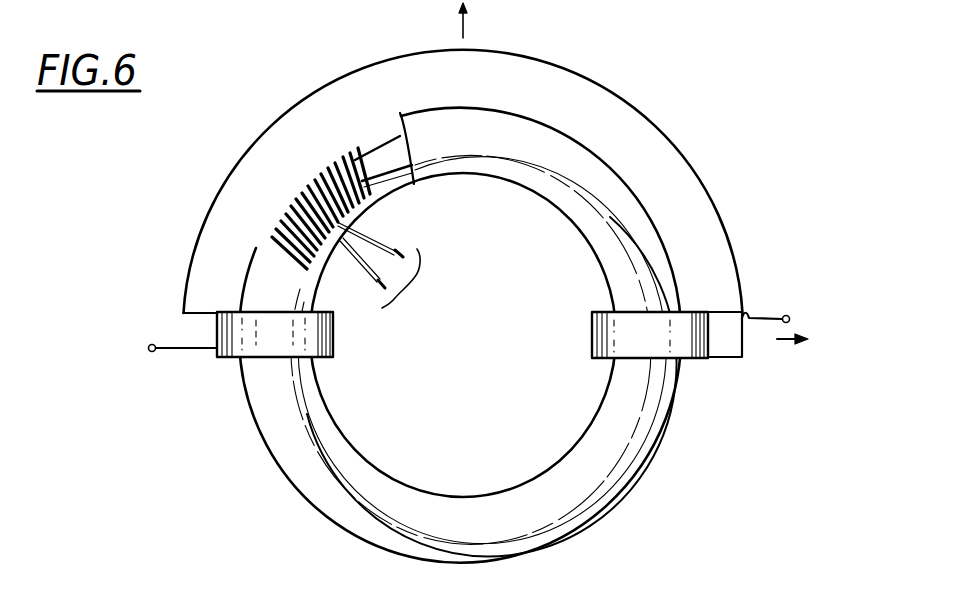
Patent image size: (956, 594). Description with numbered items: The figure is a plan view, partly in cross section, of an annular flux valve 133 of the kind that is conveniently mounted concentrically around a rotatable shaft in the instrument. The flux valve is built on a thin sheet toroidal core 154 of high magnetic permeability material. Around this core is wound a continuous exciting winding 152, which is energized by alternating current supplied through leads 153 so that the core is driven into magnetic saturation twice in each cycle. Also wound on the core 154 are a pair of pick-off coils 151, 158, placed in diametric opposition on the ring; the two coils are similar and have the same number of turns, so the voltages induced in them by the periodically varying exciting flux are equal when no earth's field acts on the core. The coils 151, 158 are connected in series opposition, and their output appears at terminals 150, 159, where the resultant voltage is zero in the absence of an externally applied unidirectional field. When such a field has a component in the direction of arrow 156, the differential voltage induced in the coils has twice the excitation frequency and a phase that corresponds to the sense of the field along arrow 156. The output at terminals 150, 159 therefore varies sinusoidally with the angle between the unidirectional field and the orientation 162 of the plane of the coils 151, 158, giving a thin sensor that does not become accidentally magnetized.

The annular flux valve 133 is at (662, 87).
The terminal 150 is at (195, 350).
The pick-off coil 151 is at (231, 311).
The exciting winding 152 is at (293, 197).
The leads 153 is at (390, 265).
The toroidal core 154 is at (377, 138).
The arrow 156 is at (462, 23).
The pick-off coil 158 is at (697, 314).
The terminal 159 is at (790, 317).
The orientation of the plane of the coils 162 is at (791, 339).